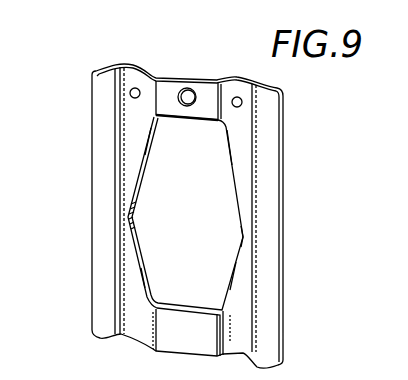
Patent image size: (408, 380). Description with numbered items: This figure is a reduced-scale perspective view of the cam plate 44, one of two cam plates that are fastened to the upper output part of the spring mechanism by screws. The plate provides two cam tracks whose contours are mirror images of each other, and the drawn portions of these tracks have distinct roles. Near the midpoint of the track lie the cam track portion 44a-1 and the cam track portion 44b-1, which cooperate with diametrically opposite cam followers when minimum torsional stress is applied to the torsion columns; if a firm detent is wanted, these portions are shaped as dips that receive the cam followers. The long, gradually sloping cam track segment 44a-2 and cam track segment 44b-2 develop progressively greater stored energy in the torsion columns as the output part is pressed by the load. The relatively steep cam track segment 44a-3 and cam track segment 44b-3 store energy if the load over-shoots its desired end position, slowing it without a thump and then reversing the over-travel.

The cam plate 44 is at (174, 75).
The cam track portion 44a-1 is at (137, 219).
The cam track segment 44a-2 is at (158, 140).
The cam track segment 44a-3 is at (145, 271).
The cam track portion 44b-1 is at (243, 236).
The cam track segment 44b-2 is at (233, 155).
The cam track segment 44b-3 is at (232, 280).